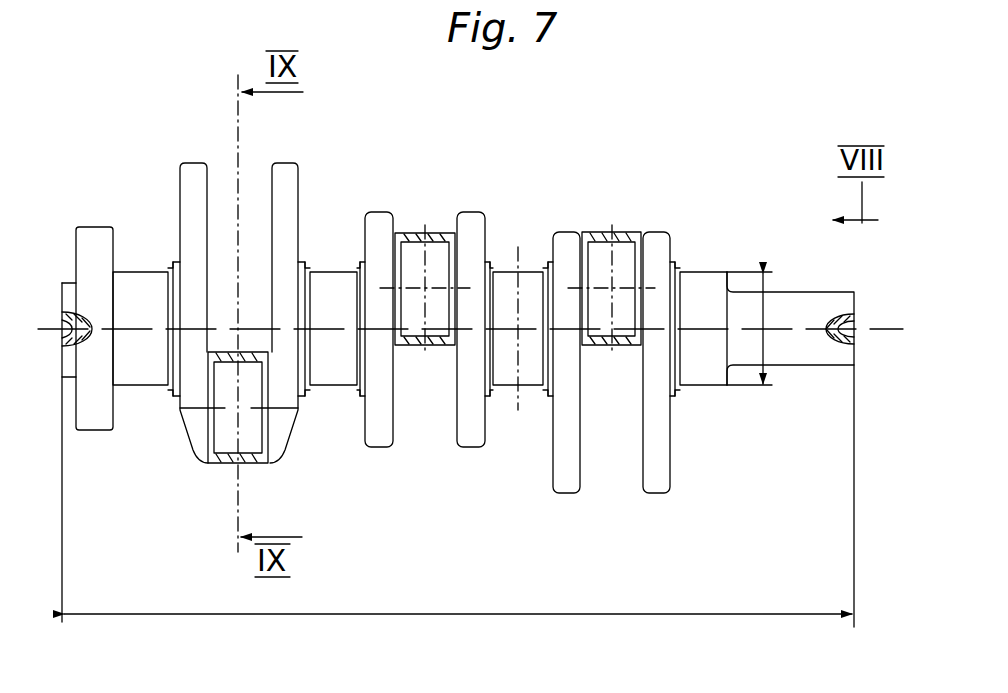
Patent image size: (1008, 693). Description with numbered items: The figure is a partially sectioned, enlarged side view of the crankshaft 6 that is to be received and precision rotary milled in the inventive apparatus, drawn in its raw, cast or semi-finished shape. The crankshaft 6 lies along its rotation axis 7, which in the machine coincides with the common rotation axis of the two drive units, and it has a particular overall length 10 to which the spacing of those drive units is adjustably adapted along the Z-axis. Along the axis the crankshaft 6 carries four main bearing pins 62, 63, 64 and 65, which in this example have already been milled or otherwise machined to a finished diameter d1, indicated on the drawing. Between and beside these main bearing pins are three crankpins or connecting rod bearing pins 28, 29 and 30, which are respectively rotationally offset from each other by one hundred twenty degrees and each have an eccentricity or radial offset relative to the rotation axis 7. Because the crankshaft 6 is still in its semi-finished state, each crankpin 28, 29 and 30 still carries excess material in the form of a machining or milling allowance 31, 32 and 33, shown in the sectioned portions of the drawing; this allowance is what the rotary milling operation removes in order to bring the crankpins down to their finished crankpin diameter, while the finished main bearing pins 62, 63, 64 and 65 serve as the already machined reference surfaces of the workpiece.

The crankshaft 6 is at (660, 498).
The rotation axis 7 is at (878, 331).
The length 10 is at (457, 614).
The crankpin 28 is at (216, 378).
The crankpin 29 is at (416, 347).
The crankpin 30 is at (603, 359).
The milling allowance 31 is at (225, 357).
The milling allowance 32 is at (410, 237).
The milling allowance 33 is at (598, 238).
The main bearing pin 62 is at (145, 287).
The main bearing pin 63 is at (327, 287).
The main bearing pin 64 is at (505, 287).
The main bearing pin 65 is at (702, 285).
The finished diameter d1 is at (763, 345).